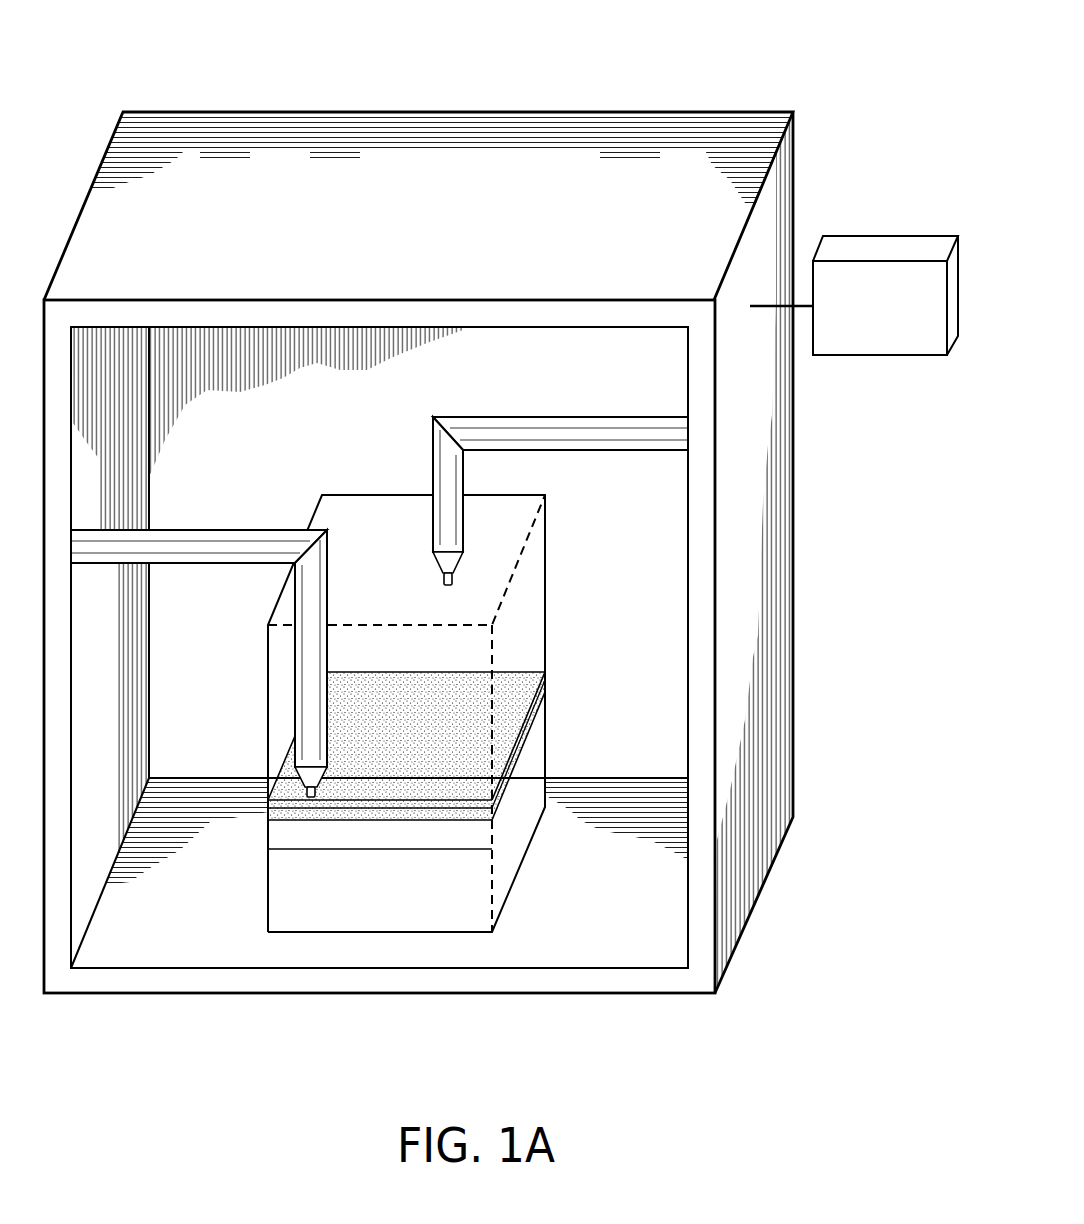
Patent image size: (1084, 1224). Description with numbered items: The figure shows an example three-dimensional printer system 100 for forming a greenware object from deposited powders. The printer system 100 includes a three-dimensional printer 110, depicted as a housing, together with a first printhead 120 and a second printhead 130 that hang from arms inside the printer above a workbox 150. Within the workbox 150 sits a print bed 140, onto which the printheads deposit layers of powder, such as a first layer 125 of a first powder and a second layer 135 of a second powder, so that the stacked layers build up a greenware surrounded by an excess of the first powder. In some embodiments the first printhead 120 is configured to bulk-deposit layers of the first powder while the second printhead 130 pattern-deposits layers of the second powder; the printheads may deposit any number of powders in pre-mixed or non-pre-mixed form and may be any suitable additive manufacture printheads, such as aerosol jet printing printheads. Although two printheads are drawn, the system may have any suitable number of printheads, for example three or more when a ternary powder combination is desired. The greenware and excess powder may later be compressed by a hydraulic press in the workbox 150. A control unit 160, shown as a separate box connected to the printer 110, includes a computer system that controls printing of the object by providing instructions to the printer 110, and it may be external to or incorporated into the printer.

The 3D printer system 100 is at (501, 533).
The 3D printer 110 is at (389, 112).
The first printhead 120 is at (325, 778).
The first layer 125 is at (277, 818).
The second printhead 130 is at (457, 566).
The second layer 135 is at (482, 803).
The print bed 140 is at (445, 837).
The workbox 150 is at (379, 668).
The control unit 160 is at (898, 315).